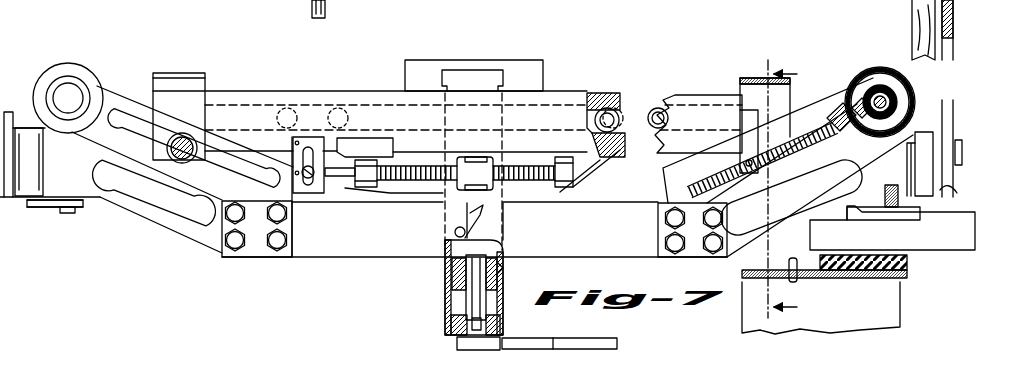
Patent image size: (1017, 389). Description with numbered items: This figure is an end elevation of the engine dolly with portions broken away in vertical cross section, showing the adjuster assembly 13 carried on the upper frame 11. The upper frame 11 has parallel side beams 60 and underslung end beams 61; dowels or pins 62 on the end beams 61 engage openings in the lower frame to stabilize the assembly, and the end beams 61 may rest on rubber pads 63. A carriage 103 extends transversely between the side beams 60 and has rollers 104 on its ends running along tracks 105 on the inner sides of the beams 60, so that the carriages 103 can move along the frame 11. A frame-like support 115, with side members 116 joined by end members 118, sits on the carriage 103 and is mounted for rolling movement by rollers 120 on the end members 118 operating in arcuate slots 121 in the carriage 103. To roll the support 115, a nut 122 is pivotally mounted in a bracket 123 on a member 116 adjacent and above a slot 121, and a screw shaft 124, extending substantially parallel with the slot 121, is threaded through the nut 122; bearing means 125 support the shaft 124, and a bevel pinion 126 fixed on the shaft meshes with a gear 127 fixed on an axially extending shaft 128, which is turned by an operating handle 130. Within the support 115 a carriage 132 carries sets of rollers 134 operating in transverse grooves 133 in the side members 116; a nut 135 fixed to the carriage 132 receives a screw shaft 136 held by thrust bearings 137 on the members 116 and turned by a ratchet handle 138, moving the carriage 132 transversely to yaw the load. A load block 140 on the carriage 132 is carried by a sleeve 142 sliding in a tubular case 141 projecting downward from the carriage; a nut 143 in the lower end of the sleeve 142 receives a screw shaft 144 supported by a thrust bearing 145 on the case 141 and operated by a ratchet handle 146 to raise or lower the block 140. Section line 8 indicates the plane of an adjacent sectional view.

The section line 8- 8 is at (782, 192).
The upper frame 11 is at (8, 112).
The adjuster assembly 13 is at (599, 90).
The side beams 60 is at (957, 116).
The end beams 61 is at (937, 237).
The dowels or pins 62 is at (798, 280).
The pads 63 is at (898, 278).
The carriages 103 is at (360, 240).
The rollers 104 is at (27, 128).
The tracks 105 is at (27, 196).
The second carriage or support 115 is at (342, 91).
The side members 116 is at (240, 100).
The end members 118 is at (173, 73).
The rollers 120 is at (157, 110).
The arcuate slots 121 is at (213, 157).
The nut 122 is at (766, 178).
The brackets 123 is at (748, 120).
The screw shafts 124 is at (843, 168).
The bearing means 125 is at (833, 110).
The bevel pinion 126 is at (862, 88).
The gears 127 is at (894, 88).
The shafts 128 is at (900, 103).
The operating handle 130 is at (901, 3).
The carriages 132 is at (643, 115).
The tracks or grooves 133 is at (582, 180).
The rollers 134 is at (302, 147).
The nut 135 is at (483, 173).
The screw shaft 136 is at (422, 190).
The thrust bearings 137 is at (361, 185).
The ratchet handles 138 is at (325, 6).
The pad or block 140 is at (503, 70).
The tubular cases 141 is at (445, 295).
The sleeve 142 is at (447, 270).
The nuts 143 is at (500, 272).
The screw shafts 144 is at (484, 303).
The thrust bearings 145 is at (450, 324).
The ratchet handles 146 is at (613, 343).